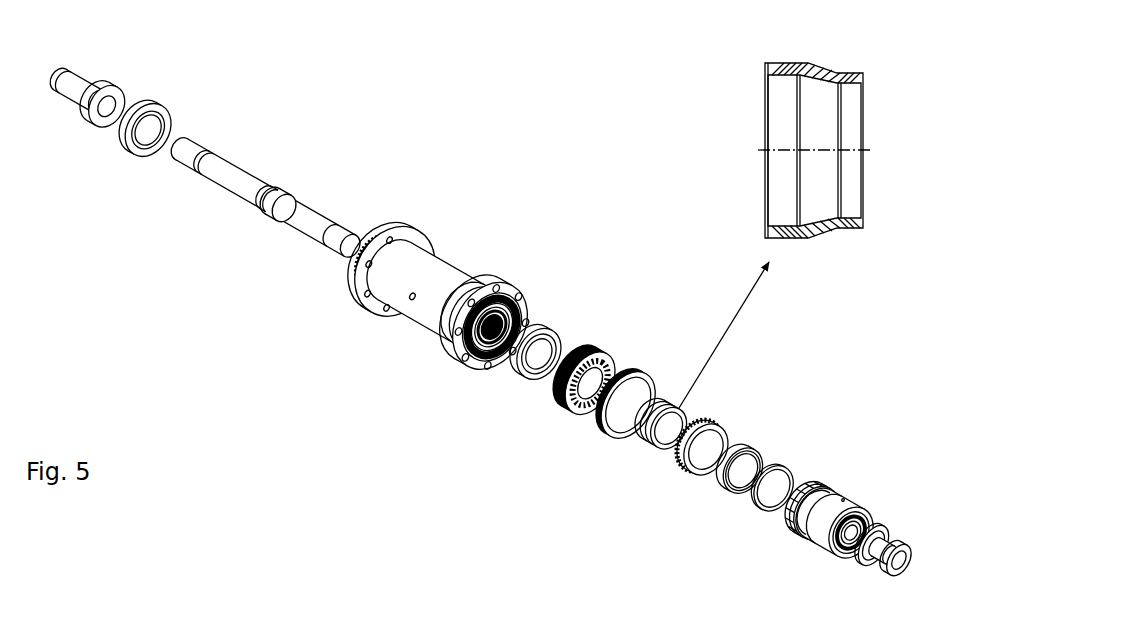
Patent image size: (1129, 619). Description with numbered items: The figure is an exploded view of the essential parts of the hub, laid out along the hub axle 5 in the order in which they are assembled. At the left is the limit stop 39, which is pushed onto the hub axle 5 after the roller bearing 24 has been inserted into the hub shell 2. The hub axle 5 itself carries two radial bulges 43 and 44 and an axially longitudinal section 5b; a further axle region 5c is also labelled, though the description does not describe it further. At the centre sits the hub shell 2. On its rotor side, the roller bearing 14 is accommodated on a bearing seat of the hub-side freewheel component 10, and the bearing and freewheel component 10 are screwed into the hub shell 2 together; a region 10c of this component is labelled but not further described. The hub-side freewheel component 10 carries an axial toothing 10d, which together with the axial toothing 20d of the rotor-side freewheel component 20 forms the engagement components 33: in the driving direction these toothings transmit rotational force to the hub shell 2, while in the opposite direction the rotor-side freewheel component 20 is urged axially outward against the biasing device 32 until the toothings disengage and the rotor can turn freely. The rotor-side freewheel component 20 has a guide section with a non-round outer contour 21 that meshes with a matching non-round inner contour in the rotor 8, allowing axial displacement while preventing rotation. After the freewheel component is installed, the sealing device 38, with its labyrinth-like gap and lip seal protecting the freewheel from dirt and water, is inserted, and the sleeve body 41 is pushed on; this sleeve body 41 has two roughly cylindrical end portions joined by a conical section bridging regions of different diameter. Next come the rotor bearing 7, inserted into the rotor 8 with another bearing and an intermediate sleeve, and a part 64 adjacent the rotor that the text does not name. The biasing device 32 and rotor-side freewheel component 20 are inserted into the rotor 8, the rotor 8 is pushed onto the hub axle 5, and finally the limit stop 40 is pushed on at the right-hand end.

The limit stop 39 is at (86, 79).
The roller bearing 24 is at (151, 106).
The radial bulge 43 is at (216, 138).
The hub axle 5 is at (270, 176).
The axle portion 5c is at (229, 187).
The axially longitudinal section 5b is at (276, 214).
The radial bulge 44 is at (296, 177).
The hub shell 2 is at (432, 270).
The roller bearing 14 is at (550, 333).
The hub-side freewheel component 10 is at (581, 372).
The outer surface of first ratchet ring 10c is at (558, 394).
The axial toothing 10d is at (613, 352).
The engagement components 33 is at (587, 410).
The sealing device 38 is at (636, 383).
The sleeve body 41 is at (680, 424).
The non-round outer contour 21 is at (691, 469).
The rotor-side freewheel component 20 is at (739, 436).
The axial toothing 20d is at (686, 468).
The biasing device 32 is at (744, 492).
The washer 64 is at (787, 476).
The rotor 8 is at (843, 504).
The rotor bearing 7 is at (860, 524).
The limit stop 40 is at (892, 553).